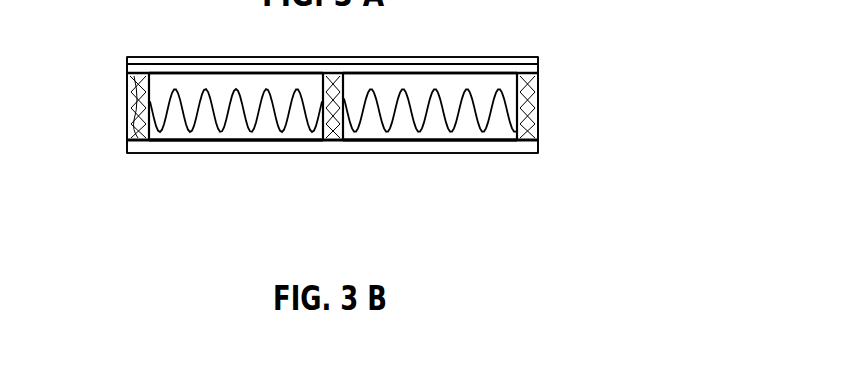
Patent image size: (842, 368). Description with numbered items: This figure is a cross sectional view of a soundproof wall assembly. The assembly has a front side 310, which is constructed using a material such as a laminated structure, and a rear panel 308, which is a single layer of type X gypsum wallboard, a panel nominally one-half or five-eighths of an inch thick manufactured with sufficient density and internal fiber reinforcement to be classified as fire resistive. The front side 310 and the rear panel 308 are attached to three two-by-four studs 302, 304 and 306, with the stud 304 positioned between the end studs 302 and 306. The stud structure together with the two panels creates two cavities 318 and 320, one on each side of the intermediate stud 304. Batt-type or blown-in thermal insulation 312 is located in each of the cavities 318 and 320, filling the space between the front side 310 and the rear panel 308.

The 2×4 stud 302 is at (130, 129).
The 2×4 stud 304 is at (322, 128).
The 2×4 stud 306 is at (533, 122).
The rear panel 308 is at (498, 150).
The front side 310 is at (538, 65).
The thermal insulation 312 is at (168, 118).
The cavity 318 is at (222, 82).
The cavity 320 is at (422, 82).